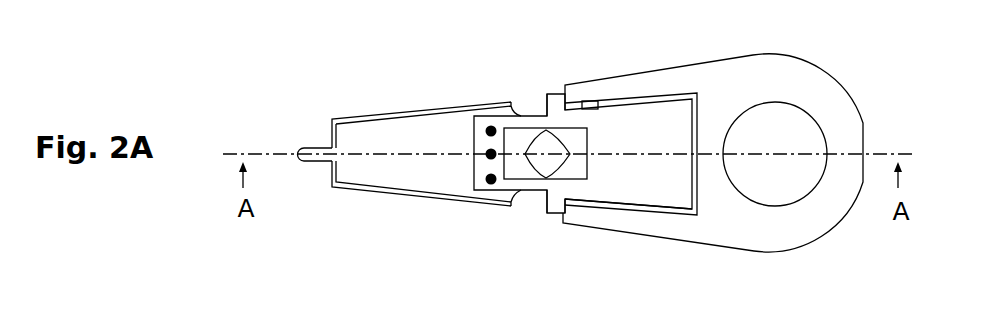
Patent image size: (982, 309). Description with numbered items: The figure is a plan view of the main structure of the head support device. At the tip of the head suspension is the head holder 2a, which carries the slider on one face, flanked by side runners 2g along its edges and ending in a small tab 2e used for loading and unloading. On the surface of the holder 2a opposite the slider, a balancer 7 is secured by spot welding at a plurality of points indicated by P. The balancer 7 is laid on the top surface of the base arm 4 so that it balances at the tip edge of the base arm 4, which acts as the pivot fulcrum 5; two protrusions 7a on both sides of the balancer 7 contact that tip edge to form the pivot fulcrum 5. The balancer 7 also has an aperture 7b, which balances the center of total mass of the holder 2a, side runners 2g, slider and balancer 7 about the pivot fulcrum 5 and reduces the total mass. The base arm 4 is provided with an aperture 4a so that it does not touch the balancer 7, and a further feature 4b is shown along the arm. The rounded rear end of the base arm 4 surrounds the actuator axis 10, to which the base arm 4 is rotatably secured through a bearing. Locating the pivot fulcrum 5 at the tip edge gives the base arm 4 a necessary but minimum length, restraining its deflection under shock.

The side runners 2g is at (387, 114).
The head holder 2a is at (384, 170).
The tab 2e is at (308, 163).
The balancer 7 is at (617, 172).
The protrusions 7a is at (565, 201).
The aperture 7b is at (515, 140).
The pivot fulcrum 5 is at (555, 93).
The base arm 4 is at (730, 82).
The aperture 4a is at (656, 100).
The projection 4b is at (597, 101).
The spot welding points P is at (481, 186).
The actuator axis 10 is at (790, 125).